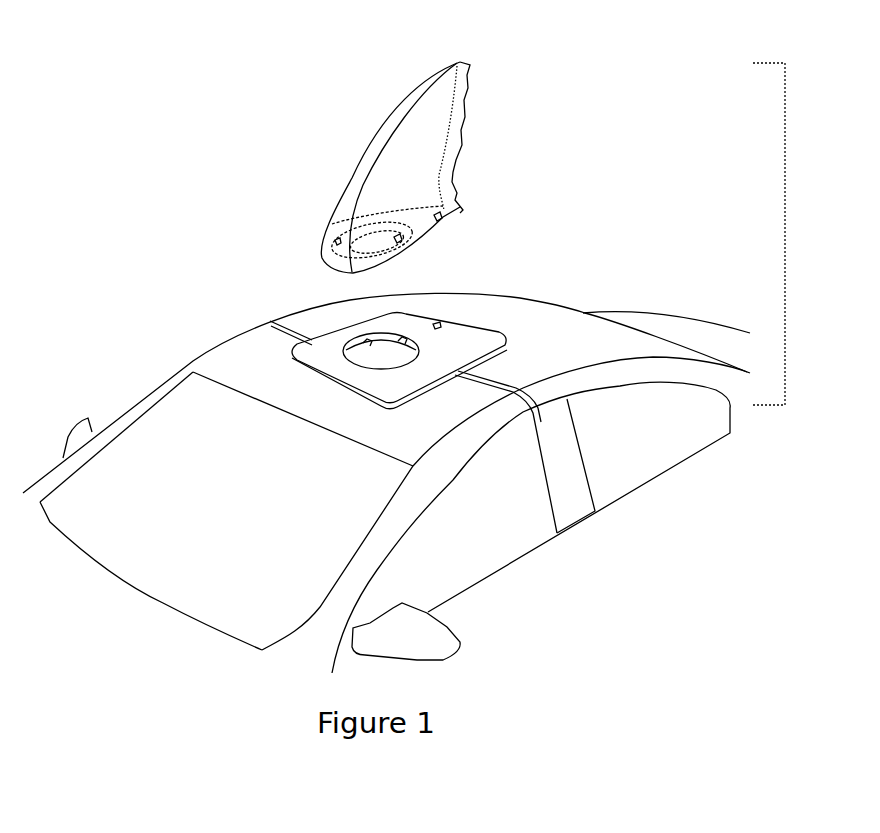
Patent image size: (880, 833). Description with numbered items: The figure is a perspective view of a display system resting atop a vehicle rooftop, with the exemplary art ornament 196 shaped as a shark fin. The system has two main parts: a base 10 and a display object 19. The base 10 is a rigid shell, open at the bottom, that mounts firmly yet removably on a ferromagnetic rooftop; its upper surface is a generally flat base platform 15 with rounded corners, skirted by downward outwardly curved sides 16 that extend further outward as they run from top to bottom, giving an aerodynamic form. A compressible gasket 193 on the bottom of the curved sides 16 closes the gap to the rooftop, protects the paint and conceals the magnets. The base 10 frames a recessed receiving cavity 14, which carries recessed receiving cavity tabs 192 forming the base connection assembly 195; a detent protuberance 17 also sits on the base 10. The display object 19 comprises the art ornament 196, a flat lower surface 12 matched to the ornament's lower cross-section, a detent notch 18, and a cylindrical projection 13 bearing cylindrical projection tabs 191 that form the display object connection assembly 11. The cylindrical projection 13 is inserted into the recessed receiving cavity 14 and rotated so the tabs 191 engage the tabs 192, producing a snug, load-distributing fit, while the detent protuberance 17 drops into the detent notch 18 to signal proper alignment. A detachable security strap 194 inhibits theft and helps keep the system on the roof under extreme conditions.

The base 10 is at (280, 345).
The display object connection assembly 11 is at (330, 249).
The flat lower surface 12 is at (428, 232).
The cylindrical projection 13 is at (372, 247).
The recessed receiving cavity 14 is at (400, 357).
The flat base platform 15 is at (426, 321).
The downward outwardly curved sides 16 is at (572, 401).
The detent protuberance 17 is at (442, 326).
The detent notch 18 is at (440, 214).
The display object 19 is at (471, 135).
The cylindrical projection tab 191 is at (422, 246).
The recessed receiving cavity tab 192 is at (343, 353).
The gasket 193 is at (368, 366).
The security strap 194 is at (285, 330).
The base connection assembly 195 is at (372, 376).
The art ornament 196 is at (398, 172).